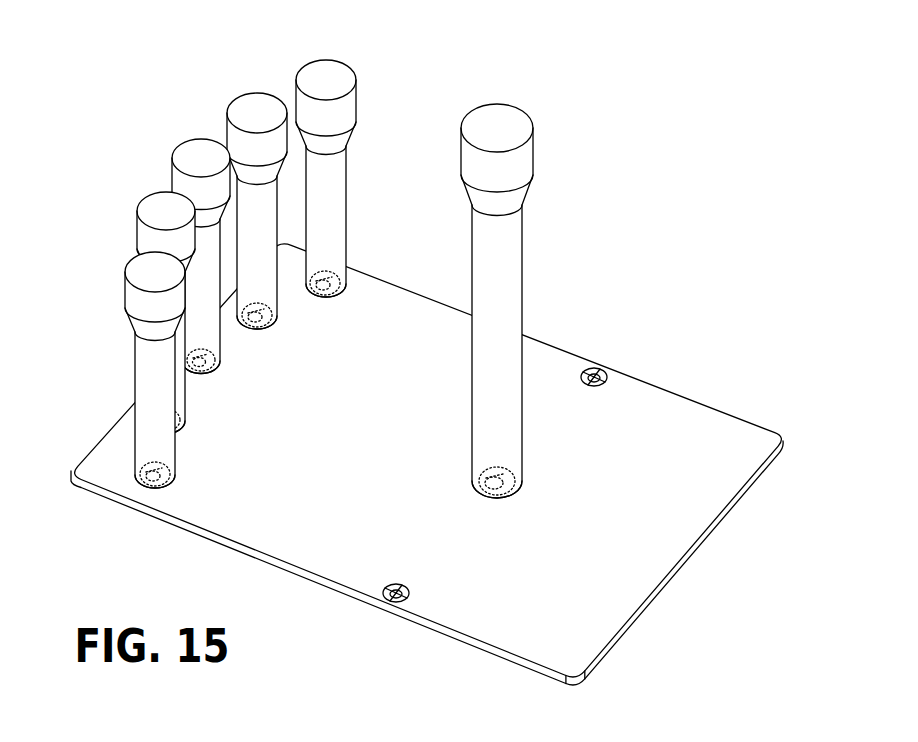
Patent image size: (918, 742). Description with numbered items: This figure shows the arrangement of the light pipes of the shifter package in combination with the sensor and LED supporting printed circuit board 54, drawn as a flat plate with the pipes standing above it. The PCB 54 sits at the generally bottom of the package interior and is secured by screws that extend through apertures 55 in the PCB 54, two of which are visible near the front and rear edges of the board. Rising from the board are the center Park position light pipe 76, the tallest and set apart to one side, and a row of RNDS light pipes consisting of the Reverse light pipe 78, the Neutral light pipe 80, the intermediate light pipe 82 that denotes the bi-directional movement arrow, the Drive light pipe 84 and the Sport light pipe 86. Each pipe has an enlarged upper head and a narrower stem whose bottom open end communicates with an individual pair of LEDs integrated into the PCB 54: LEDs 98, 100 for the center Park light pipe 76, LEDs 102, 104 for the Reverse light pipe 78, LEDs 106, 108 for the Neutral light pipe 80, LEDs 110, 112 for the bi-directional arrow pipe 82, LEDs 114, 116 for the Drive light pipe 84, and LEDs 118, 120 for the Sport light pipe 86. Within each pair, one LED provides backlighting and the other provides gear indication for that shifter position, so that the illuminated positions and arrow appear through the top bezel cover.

The printed circuit board 54 is at (697, 432).
The aperture 55 is at (596, 370).
The center Park position light pipe 76 is at (507, 293).
The Reverse light pipe 78 is at (145, 359).
The Neutral light pipe 80 is at (145, 240).
The intermediate light pipe 82 is at (178, 177).
The Drive light pipe 84 is at (247, 108).
The Sport light pipe 86 is at (348, 104).
The LED 98 is at (481, 494).
The LED 100 is at (512, 493).
The LED 102 is at (143, 478).
The LED 104 is at (166, 490).
The LED 106 is at (175, 428).
The LED 108 is at (186, 421).
The LED 110 is at (206, 376).
The LED 112 is at (216, 360).
The LED 114 is at (258, 331).
The LED 116 is at (266, 326).
The LED 118 is at (346, 284).
The LED 120 is at (338, 270).